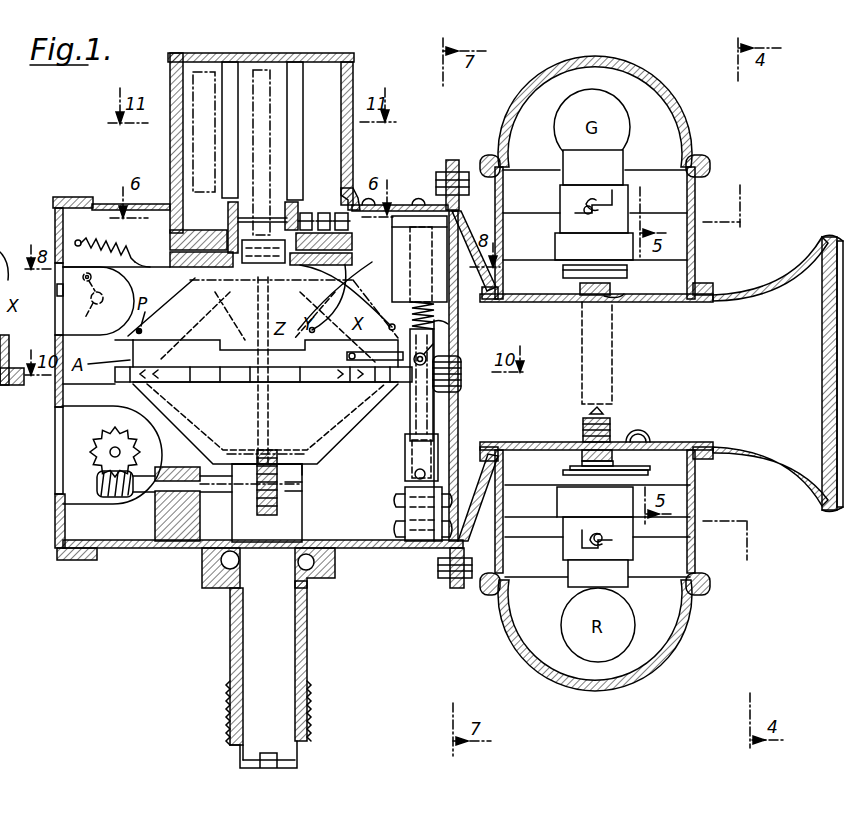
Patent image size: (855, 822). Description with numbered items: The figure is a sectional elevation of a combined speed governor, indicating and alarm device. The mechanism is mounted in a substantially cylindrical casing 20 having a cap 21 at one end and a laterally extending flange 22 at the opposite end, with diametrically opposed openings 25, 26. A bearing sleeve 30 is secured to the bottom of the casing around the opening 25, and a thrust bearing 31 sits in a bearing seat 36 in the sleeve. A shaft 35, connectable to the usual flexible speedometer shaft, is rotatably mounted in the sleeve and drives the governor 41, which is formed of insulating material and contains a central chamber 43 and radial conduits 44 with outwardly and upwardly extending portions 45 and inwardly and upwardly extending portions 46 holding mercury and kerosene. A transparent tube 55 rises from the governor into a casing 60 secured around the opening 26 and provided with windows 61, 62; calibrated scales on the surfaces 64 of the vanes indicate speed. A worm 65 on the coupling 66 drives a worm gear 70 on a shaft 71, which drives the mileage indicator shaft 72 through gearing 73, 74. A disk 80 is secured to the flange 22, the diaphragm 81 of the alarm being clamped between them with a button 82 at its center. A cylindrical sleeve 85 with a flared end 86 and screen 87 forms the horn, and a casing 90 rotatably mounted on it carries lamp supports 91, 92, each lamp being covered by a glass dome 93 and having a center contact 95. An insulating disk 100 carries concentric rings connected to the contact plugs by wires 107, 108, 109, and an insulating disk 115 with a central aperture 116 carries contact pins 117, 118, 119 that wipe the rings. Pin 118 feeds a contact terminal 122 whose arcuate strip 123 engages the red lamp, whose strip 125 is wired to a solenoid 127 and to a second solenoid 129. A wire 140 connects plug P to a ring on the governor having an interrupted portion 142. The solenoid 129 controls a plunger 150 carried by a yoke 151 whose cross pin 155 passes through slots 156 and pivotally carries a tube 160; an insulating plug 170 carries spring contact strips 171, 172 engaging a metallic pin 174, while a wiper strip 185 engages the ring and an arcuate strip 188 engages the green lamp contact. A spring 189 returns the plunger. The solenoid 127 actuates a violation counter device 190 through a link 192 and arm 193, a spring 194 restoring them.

The casing 20 is at (116, 556).
The cap 21 is at (55, 535).
The laterally extending flange 22 is at (452, 584).
The opening 25 is at (212, 540).
The opening 26 is at (184, 197).
The bearing sleeve 30 is at (307, 617).
The thrust bearing 31 is at (205, 587).
The shaft 35 is at (246, 631).
The bearing seat 36 is at (314, 588).
The governor 41 is at (118, 372).
The central chamber 43 is at (272, 403).
The conduits 44 is at (242, 447).
The outwardly and upwardly extending portions 45 is at (330, 408).
The inwardly and upwardly extending portions 46 is at (190, 332).
The tube 55 is at (298, 118).
The casing 60 is at (354, 76).
The window 61 is at (357, 96).
The window 62 is at (171, 87).
The vane surfaces 64 is at (232, 62).
The worm 65 is at (318, 481).
The coupling 66 is at (303, 499).
The worm gear 70 is at (302, 514).
The shaft 71 is at (166, 470).
The mileage indicator shaft 72 is at (113, 449).
The gearing 73 is at (97, 485).
The gearing 74 is at (92, 453).
The disk 80 is at (466, 180).
The diaphragm 81 is at (459, 402).
The button 82 is at (443, 354).
The cylindrical sleeve 85 is at (532, 304).
The flared outer end 86 is at (785, 268).
The screen 87 is at (826, 302).
The cylindrical casing 90 is at (696, 260).
The lamp support 91 is at (678, 263).
The lamp support 92 is at (696, 487).
The glass dome 93 is at (676, 128).
The center contact 95 is at (620, 299).
The insulating disk 100 is at (170, 258).
The wire 107 is at (358, 292).
The wire 108 is at (353, 273).
The wire 109 is at (266, 335).
The insulating disk 115 is at (170, 240).
The central aperture 116 is at (229, 234).
The contact pin 117 is at (337, 212).
The contact pin 118 is at (320, 212).
The contact pin 119 is at (302, 212).
The contact terminal 122 is at (600, 418).
The arcuate metallic contact strip 123 is at (582, 463).
The strip 125 is at (644, 471).
The solenoid 127 is at (369, 254).
The solenoid 129 is at (438, 232).
The wire 140 is at (137, 333).
The interrupted portion 142 is at (217, 348).
The core or plunger 150 is at (437, 309).
The yoke 151 is at (416, 412).
The cross pin 155 is at (416, 472).
The slots 156 is at (418, 451).
The tube 160 is at (437, 417).
The insulating plug 170 is at (414, 548).
The spring contact strip 171 is at (450, 506).
The spring contact strip 172 is at (402, 507).
The metallic pin 174 is at (403, 496).
The wiper strip 185 is at (347, 356).
The elongated arcuate strip 188 is at (580, 286).
The spring 189 is at (436, 320).
The violation counter device 190 is at (66, 290).
The link 192 is at (170, 300).
The arm 193 is at (98, 301).
The spring 194 is at (110, 240).